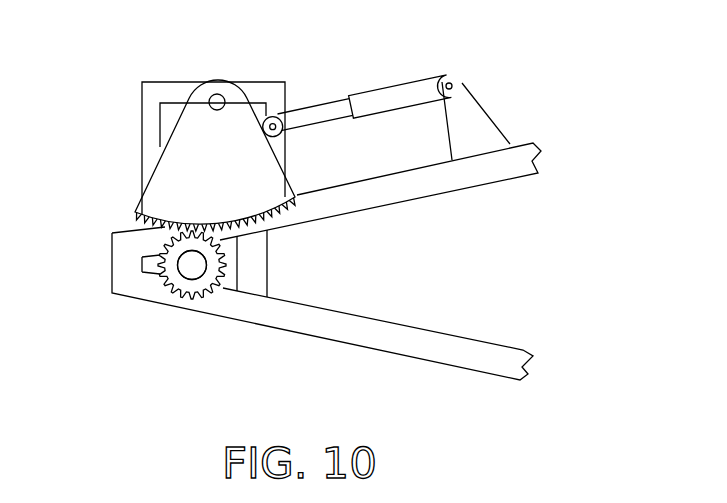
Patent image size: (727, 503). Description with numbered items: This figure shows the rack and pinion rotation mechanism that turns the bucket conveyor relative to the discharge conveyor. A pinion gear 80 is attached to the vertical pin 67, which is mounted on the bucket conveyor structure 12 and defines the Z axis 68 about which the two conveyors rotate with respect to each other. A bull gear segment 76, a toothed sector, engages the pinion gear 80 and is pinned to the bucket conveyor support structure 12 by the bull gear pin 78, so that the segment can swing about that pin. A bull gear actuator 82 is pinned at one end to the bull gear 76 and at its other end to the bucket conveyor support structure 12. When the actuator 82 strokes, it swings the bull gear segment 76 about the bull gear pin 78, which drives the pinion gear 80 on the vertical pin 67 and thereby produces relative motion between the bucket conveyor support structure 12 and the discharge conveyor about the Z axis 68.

The bucket conveyor structure 12 is at (287, 81).
The bull gear segment 76 is at (188, 159).
The bull gear pin 78 is at (217, 94).
The bull gear actuator 82 is at (408, 82).
The pinion gear 80 is at (168, 288).
The Z axis 68 is at (208, 262).
The vertical pin 67 is at (318, 250).